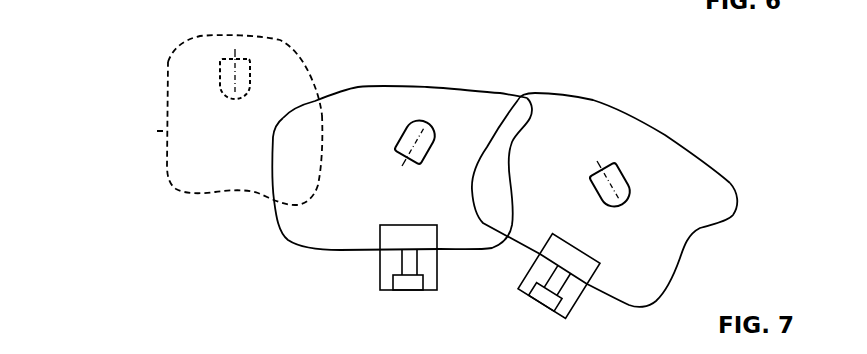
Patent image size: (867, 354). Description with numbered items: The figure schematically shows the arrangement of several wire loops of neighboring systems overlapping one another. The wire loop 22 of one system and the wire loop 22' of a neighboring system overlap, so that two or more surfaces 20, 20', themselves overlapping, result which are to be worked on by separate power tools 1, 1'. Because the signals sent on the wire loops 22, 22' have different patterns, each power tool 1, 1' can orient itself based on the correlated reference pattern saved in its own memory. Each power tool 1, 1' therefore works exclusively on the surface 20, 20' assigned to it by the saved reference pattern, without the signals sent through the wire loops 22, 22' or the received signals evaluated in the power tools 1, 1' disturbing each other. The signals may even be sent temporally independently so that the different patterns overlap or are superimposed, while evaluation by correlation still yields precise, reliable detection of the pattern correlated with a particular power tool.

The power tool 1 is at (426, 92).
The power tool 1' is at (625, 135).
The surface 20 is at (402, 150).
The surface 20' is at (629, 209).
The wire loop 22 is at (405, 64).
The wire loop 22' is at (624, 134).